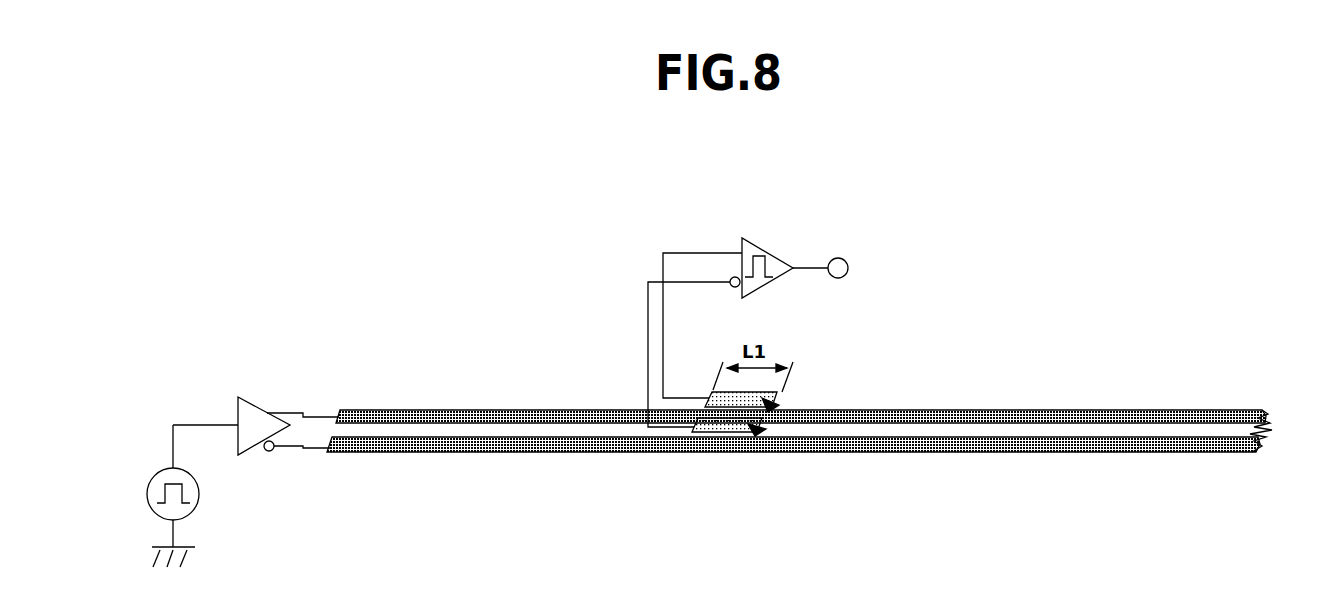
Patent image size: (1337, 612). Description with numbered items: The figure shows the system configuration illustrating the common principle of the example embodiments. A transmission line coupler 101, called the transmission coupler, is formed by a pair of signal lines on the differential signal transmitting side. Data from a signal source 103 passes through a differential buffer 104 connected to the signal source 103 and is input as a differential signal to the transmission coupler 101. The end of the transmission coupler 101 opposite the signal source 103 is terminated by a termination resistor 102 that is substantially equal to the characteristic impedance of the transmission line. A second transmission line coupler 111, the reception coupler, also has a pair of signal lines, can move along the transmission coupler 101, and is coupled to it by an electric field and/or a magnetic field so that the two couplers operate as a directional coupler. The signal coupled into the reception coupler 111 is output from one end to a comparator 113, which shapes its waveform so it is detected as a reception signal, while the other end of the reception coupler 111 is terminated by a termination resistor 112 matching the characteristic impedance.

The transmission line coupler 101 is at (1043, 445).
The termination resistor 102 is at (1272, 444).
The signal source 103 is at (200, 494).
The differential buffer 104 is at (258, 402).
The transmission line coupler 111 is at (708, 402).
The termination resistor 112 is at (788, 418).
The comparator 113 is at (757, 242).